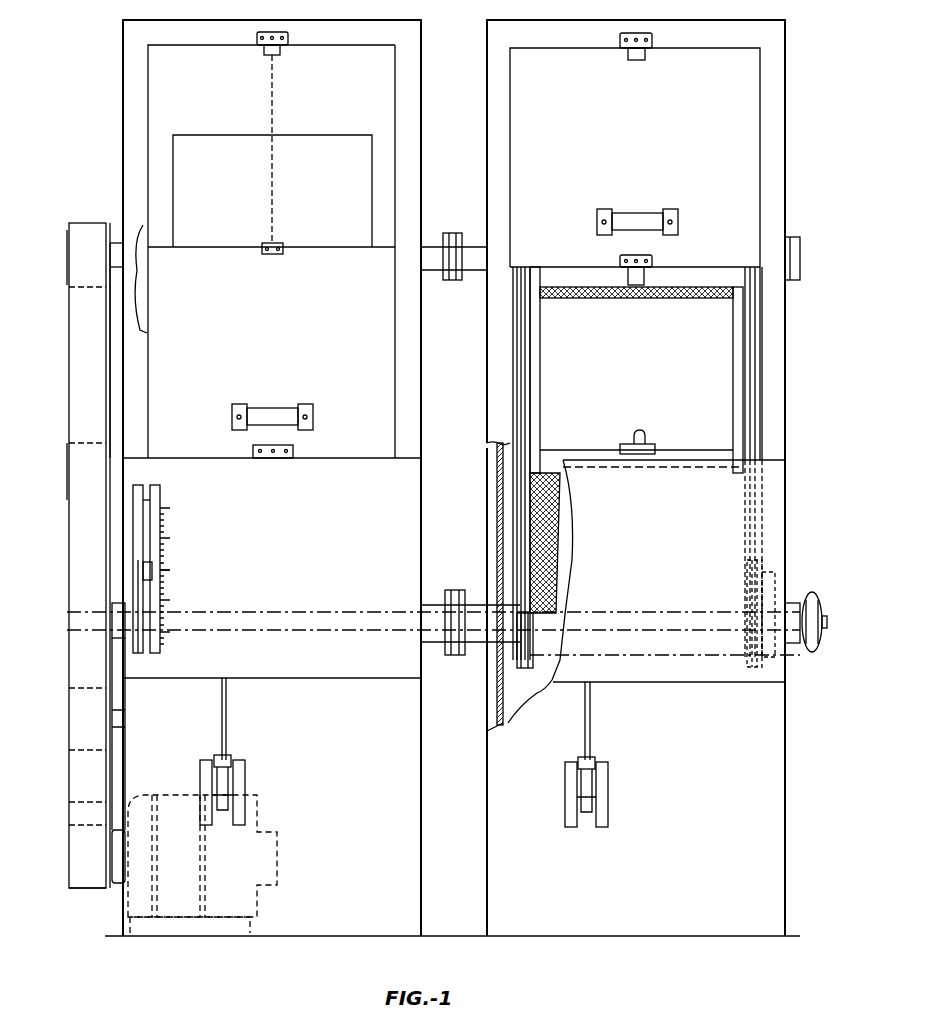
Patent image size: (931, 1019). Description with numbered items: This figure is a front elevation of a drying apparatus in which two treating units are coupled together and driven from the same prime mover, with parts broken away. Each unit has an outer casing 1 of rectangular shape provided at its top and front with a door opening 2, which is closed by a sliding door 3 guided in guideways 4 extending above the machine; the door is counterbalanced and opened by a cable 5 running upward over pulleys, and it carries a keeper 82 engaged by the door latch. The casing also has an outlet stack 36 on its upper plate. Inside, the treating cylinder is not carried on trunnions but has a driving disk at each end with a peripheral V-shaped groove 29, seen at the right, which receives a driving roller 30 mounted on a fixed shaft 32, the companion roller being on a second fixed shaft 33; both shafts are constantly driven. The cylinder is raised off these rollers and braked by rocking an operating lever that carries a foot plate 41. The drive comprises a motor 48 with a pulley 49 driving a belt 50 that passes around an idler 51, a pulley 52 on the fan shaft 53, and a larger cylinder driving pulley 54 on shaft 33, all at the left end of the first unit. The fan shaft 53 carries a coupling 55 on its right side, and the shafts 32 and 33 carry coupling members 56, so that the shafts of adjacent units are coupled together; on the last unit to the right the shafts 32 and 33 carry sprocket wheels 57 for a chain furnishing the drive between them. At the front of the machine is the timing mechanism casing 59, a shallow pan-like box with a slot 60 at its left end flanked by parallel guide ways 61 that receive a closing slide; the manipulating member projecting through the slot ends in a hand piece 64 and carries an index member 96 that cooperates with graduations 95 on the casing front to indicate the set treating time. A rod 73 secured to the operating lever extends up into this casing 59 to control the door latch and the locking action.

The outer casing 1 is at (308, 916).
The door opening 2 is at (376, 104).
The sliding door 3 is at (496, 246).
The guideways 4 is at (405, 158).
The cable 5 is at (276, 105).
The V-shaped groove 29 is at (520, 278).
The driving roller 30 is at (518, 650).
The fixed shaft 32 is at (676, 620).
The fixed shaft 33 is at (86, 612).
The outlet stack 36 is at (196, 158).
The foot plate 41 is at (238, 796).
The motor 48 is at (155, 905).
The pulley 49 is at (63, 888).
The belt 50 is at (96, 758).
The idler 51 is at (112, 697).
The pulley 52 is at (63, 235).
The fan shaft 53 is at (112, 245).
The cylinder driving pulley 54 is at (110, 458).
The coupling 55 is at (455, 236).
The coupling member 56 is at (455, 590).
The sprocket wheel 57 is at (830, 598).
The casing 59 is at (272, 606).
The slot 60 is at (150, 497).
The guide ways 61 is at (155, 628).
The hand piece 64 is at (143, 572).
The rod 73 is at (226, 718).
The keeper 82 is at (285, 452).
The graduations 95 is at (163, 540).
The index member 96 is at (162, 572).